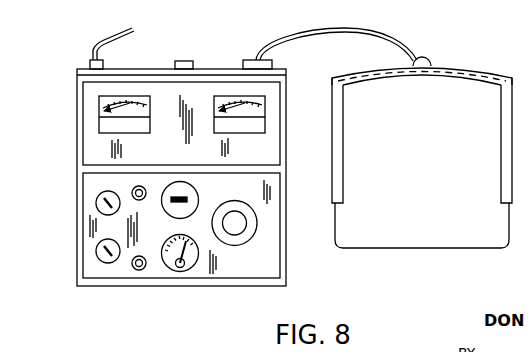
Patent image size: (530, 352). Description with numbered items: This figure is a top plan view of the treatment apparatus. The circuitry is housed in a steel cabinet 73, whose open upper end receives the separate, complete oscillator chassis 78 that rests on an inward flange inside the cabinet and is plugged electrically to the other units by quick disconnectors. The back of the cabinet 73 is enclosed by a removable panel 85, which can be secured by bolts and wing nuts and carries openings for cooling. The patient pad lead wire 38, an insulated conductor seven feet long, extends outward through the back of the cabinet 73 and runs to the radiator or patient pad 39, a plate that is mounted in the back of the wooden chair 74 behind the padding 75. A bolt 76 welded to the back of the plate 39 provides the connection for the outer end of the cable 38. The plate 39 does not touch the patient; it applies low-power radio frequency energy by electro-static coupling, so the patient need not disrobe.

The patient pad lead wire 38 is at (340, 34).
The radiator or patient pad 39 is at (422, 153).
The cabinet 73 is at (77, 237).
The wooden chair 74 is at (427, 251).
The padding 75 is at (498, 86).
The bolt 76 is at (428, 58).
The oscillator chassis 78 is at (77, 146).
The removable panel 85 is at (289, 70).